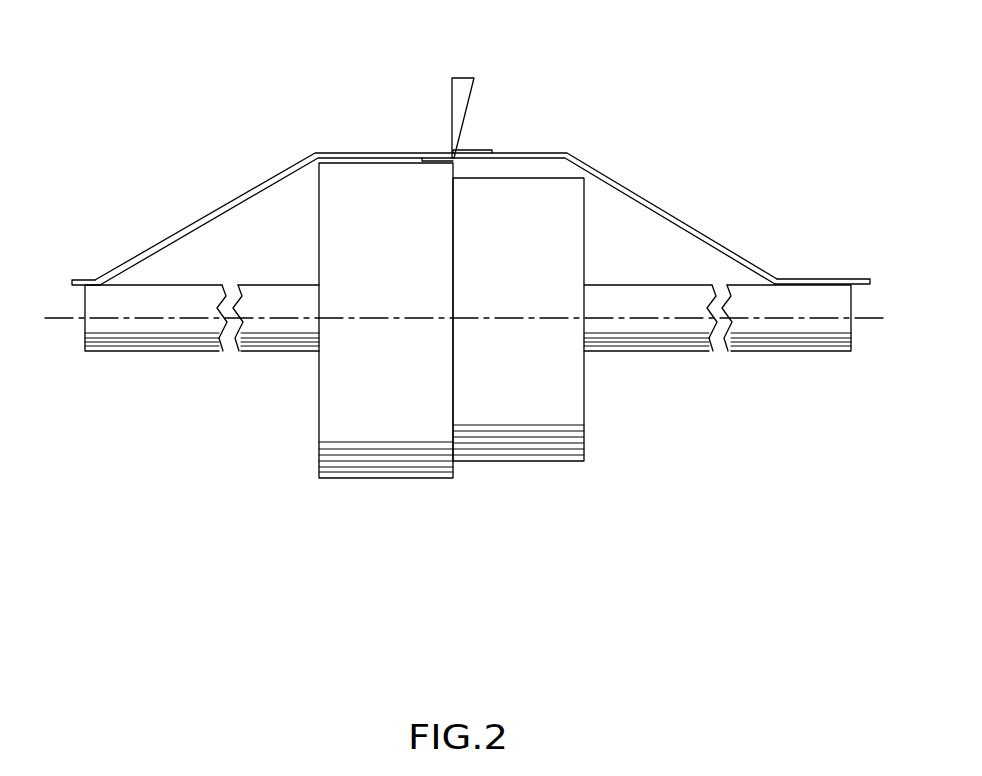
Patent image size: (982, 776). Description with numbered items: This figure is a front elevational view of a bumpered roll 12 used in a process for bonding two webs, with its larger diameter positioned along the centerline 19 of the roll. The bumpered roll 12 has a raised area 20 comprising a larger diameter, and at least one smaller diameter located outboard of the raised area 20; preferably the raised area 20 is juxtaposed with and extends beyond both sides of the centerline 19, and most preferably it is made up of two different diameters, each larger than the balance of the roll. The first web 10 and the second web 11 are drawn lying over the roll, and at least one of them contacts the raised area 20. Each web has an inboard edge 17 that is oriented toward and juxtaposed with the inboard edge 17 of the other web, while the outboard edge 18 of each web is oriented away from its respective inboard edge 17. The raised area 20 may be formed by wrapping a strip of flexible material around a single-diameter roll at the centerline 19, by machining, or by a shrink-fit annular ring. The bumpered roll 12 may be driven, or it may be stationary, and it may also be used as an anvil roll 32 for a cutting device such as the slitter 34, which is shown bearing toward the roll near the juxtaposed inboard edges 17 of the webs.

The first web 10 is at (185, 228).
The second web 11 is at (618, 186).
The bumpered roll 12 is at (399, 389).
The inboard edge 17 is at (478, 151).
The outboard edge 18 is at (64, 268).
The centerline 19 is at (456, 396).
The raised area 20 is at (462, 474).
The anvil roll 32 is at (191, 334).
The slitter 34 is at (462, 92).